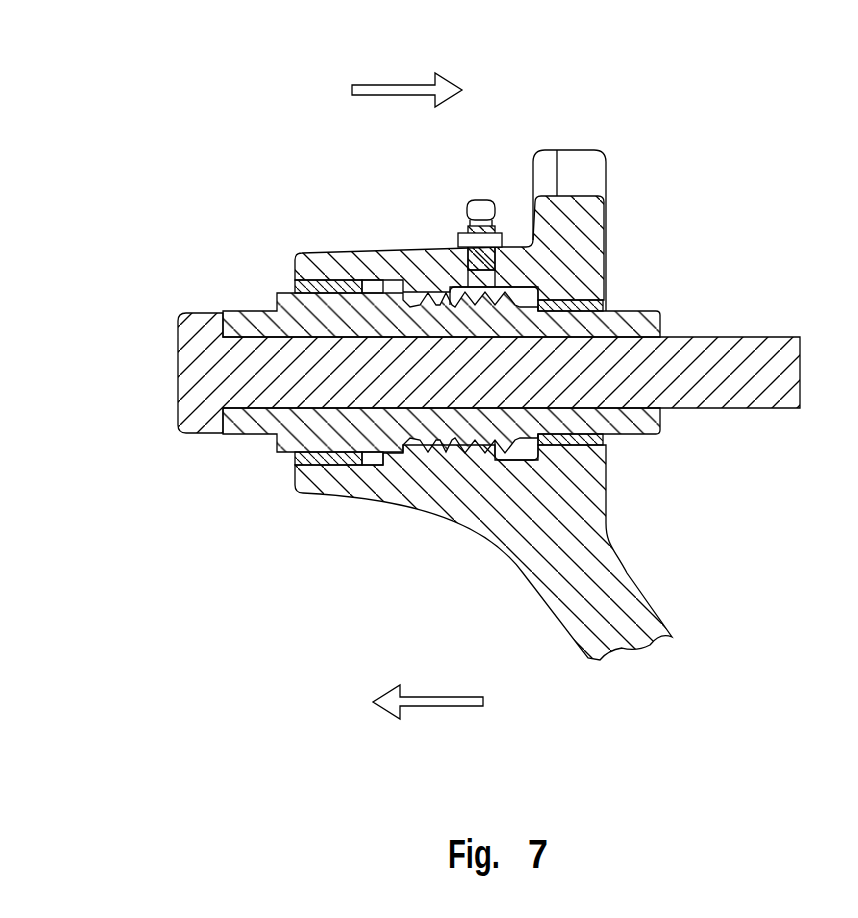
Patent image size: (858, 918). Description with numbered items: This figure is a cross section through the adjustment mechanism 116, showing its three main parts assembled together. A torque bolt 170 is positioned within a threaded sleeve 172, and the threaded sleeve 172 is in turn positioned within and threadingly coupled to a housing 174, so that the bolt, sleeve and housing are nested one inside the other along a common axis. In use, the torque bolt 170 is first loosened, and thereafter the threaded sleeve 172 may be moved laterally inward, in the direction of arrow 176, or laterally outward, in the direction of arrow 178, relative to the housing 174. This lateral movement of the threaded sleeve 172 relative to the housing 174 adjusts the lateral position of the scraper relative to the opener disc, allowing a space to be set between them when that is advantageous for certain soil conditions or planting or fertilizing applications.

The adjustment mechanism 116 is at (446, 394).
The torque bolt 170 is at (192, 372).
The threaded sleeve 172 is at (300, 428).
The housing 174 is at (490, 515).
The arrow 176 is at (395, 95).
The arrow 178 is at (440, 706).